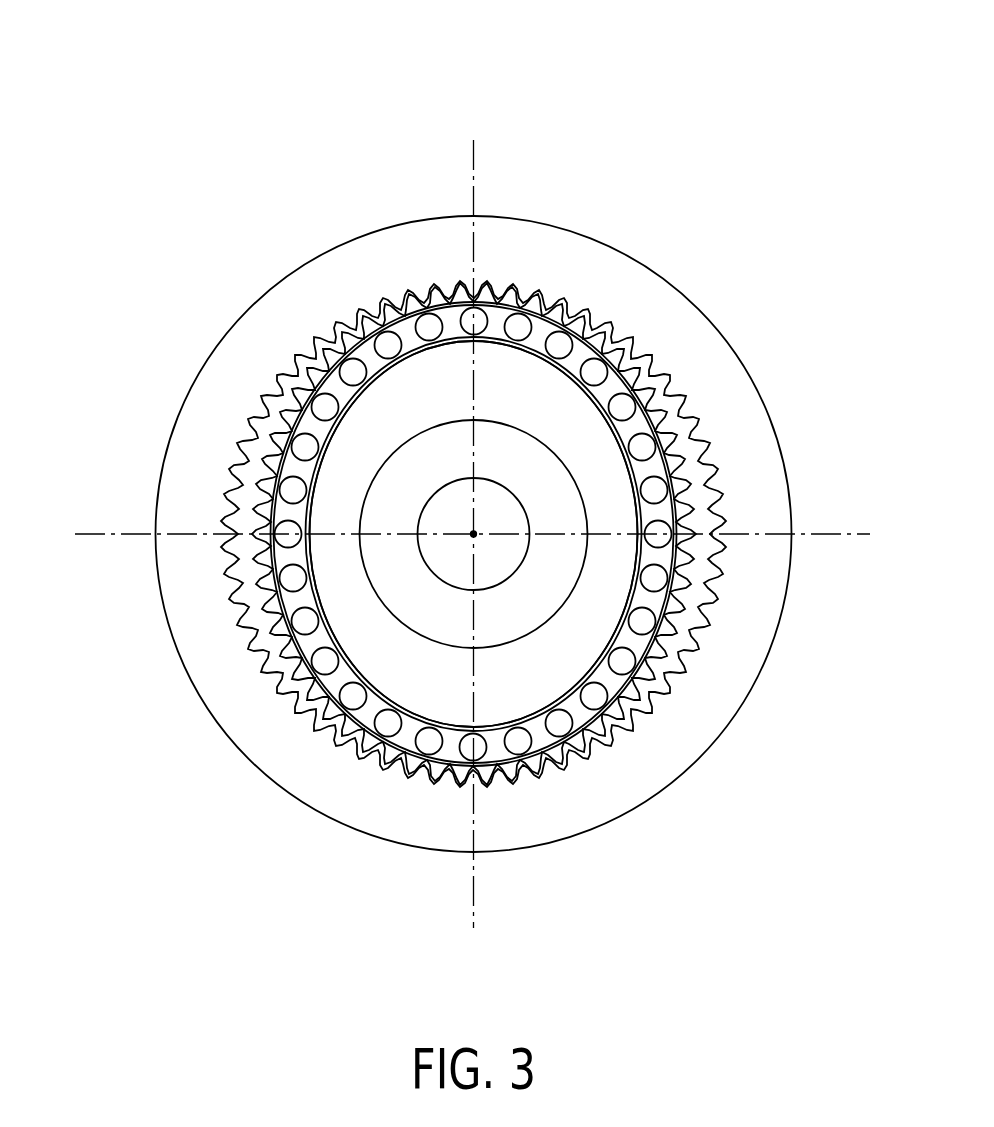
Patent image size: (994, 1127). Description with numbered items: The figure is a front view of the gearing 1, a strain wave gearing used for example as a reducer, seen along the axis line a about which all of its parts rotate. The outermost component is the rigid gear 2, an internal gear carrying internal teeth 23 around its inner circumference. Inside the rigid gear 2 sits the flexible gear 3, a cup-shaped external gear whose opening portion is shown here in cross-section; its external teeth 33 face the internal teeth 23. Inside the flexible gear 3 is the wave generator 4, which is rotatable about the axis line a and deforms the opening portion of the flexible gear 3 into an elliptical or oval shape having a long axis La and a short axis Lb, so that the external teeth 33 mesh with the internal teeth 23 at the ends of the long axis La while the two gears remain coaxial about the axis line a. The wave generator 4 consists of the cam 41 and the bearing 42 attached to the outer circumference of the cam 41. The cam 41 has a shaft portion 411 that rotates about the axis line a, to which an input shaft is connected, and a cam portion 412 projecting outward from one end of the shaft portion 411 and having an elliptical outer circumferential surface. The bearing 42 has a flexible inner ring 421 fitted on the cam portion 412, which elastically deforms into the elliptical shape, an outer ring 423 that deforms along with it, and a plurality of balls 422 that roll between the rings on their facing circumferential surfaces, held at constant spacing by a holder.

The gearing 1 is at (696, 91).
The rigid gear 2 is at (493, 523).
The internal teeth 23 is at (712, 607).
The flexible gear 3 is at (539, 534).
The external teeth 33 is at (685, 643).
The wave generator 4 is at (398, 608).
The cam 41 is at (360, 546).
The shaft portion 411 is at (382, 612).
The cam portion 412 is at (392, 665).
The bearing 42 is at (494, 608).
The inner ring 421 is at (600, 743).
The balls 422 is at (557, 730).
The outer ring 423 is at (474, 598).
The axis line a is at (473, 534).
The long axis La is at (476, 180).
The short axis Lb is at (838, 538).